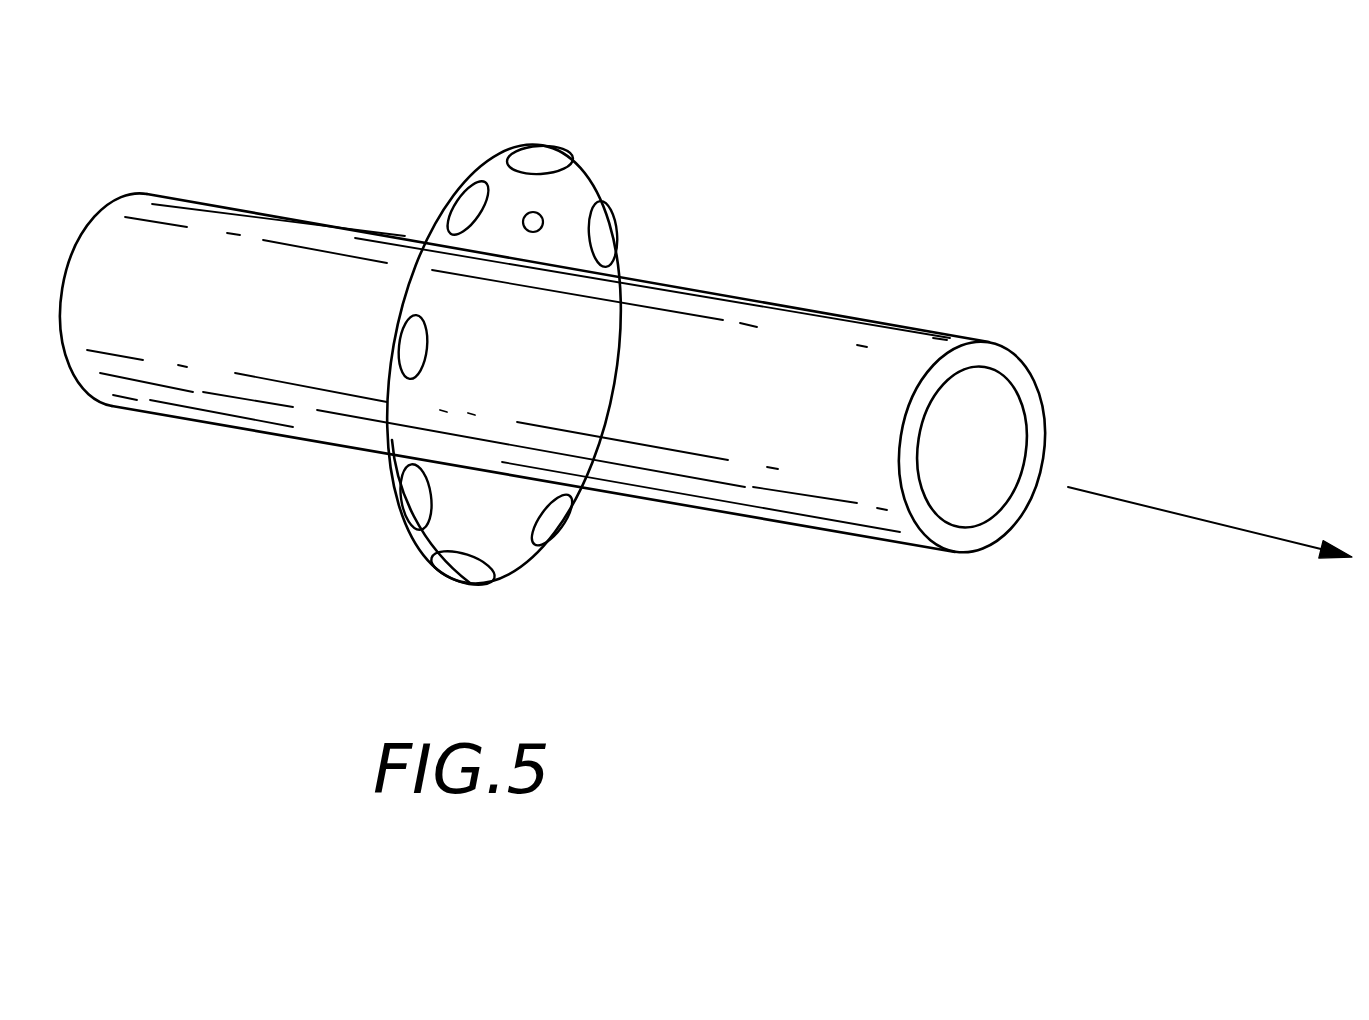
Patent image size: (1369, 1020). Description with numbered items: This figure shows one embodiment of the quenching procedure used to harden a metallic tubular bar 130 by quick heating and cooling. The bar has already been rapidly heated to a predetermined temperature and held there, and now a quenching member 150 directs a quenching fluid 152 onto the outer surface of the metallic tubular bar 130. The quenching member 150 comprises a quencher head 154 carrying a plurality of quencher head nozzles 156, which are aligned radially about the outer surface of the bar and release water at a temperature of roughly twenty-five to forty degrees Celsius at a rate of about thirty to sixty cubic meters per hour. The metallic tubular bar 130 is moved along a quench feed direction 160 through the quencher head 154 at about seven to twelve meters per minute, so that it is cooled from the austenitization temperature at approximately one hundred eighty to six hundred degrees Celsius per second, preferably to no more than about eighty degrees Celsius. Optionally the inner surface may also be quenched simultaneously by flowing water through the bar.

The metallic tubular bar 130 is at (1033, 350).
The quenching member 150 is at (500, 143).
The quenching fluid 152 is at (552, 212).
The quencher head 154 is at (413, 540).
The quencher head nozzles 156 is at (492, 578).
The quench feed direction 160 is at (1195, 543).